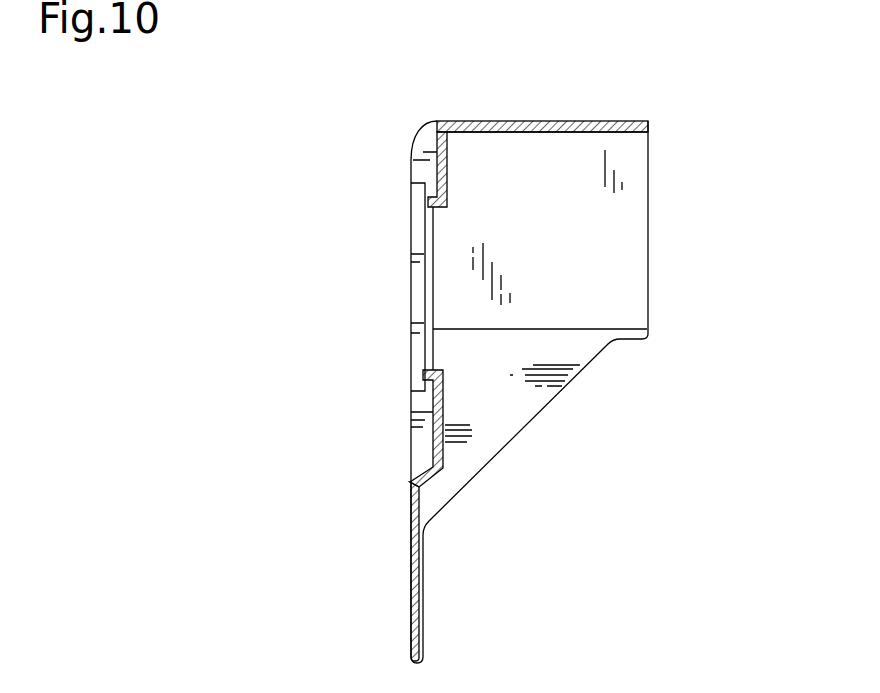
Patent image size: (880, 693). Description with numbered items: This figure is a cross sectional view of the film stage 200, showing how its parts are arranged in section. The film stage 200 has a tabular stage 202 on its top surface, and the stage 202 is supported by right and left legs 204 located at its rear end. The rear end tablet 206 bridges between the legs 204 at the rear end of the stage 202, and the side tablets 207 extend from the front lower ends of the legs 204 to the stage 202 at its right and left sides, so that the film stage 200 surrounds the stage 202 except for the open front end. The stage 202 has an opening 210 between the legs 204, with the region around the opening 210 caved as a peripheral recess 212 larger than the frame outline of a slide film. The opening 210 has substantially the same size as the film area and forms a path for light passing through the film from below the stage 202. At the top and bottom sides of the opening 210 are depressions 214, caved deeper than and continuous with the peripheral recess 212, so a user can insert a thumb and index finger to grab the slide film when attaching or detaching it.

The film stage 200 is at (247, 128).
The stage 202 is at (407, 550).
The leg 204 is at (625, 285).
The rear end tablet 206 is at (573, 122).
The side tablet 207 is at (522, 413).
The opening 210 is at (438, 222).
The peripheral recess 212 is at (418, 383).
The depression 214 is at (437, 140).